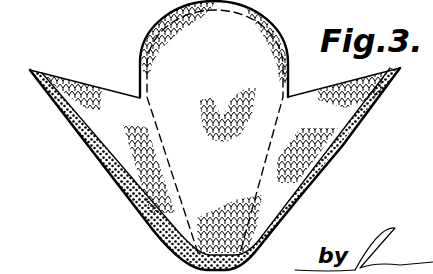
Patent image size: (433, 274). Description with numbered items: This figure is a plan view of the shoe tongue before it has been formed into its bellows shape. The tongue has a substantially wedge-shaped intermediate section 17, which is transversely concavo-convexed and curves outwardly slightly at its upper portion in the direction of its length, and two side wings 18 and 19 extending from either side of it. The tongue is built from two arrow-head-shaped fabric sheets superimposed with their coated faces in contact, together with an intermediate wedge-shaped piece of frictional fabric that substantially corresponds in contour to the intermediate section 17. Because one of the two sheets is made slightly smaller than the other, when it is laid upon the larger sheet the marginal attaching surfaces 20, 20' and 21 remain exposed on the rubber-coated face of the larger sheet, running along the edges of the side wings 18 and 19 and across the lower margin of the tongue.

The intermediate section 17 is at (175, 88).
The side wing 18 is at (112, 127).
The side wing 19 is at (327, 115).
The marginal attaching surface 20 is at (91, 150).
The marginal attaching surface 20' is at (327, 160).
The marginal attaching surface 21 is at (212, 262).